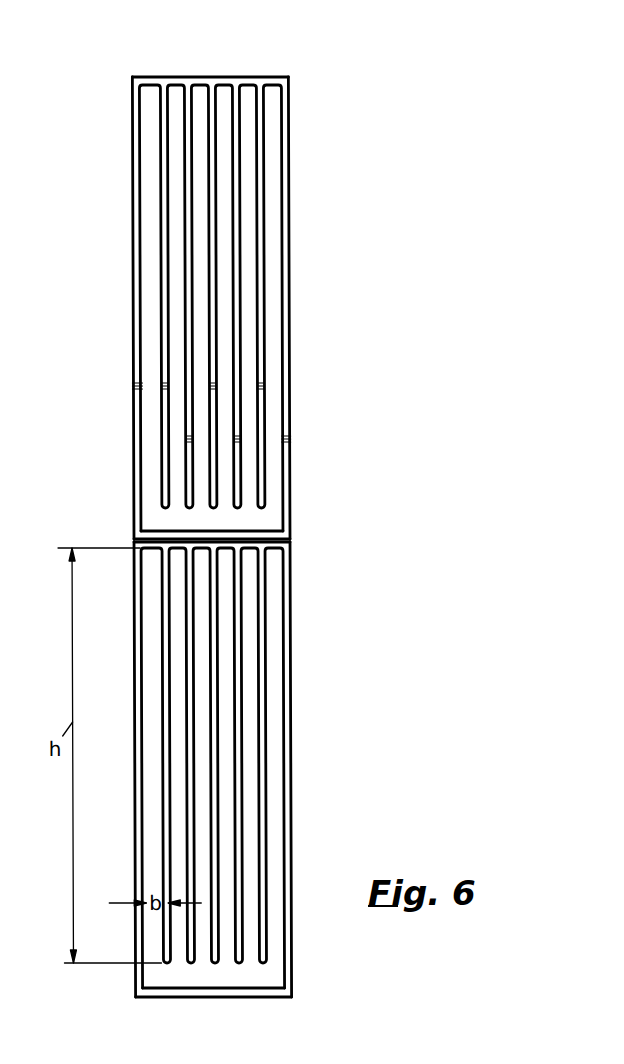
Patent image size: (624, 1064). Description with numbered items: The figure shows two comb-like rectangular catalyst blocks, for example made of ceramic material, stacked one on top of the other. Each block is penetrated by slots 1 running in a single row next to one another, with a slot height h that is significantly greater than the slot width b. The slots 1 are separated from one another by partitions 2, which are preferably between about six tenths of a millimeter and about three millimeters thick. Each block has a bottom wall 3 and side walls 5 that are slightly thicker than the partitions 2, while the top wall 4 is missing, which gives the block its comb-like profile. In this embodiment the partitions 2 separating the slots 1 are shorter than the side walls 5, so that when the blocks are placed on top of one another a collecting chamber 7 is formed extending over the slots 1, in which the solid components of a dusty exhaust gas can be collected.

The slots 1 is at (231, 104).
The partitions 2 is at (209, 106).
The bottom wall 3 is at (257, 533).
The top wall 4 is at (224, 80).
The side walls 5 is at (135, 340).
The collecting chamber 7 is at (167, 520).